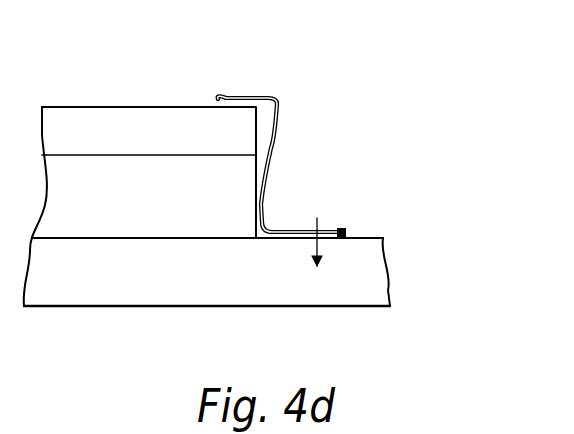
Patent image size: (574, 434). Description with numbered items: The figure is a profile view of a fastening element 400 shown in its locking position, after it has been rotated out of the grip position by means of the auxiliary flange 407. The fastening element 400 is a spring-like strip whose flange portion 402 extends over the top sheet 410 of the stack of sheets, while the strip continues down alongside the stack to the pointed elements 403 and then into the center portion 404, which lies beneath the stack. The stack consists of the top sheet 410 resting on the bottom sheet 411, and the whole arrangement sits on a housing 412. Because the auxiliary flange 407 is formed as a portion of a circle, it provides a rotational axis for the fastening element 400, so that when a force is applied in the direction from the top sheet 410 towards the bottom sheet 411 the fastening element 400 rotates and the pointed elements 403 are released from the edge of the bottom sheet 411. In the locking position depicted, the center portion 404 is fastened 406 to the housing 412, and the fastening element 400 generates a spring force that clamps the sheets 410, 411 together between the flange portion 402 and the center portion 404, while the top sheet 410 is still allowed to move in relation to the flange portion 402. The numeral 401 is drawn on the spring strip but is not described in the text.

The fastening element 400 is at (317, 138).
The spring contact 401 is at (278, 128).
The flange portion 402 is at (250, 97).
The pointed elements 403 is at (260, 204).
The center portion 404 is at (338, 229).
The fastening 406 is at (325, 228).
The auxiliary flange 407 is at (280, 230).
The top sheet 410 is at (105, 123).
The bottom sheet 411 is at (202, 213).
The housing 412 is at (152, 295).